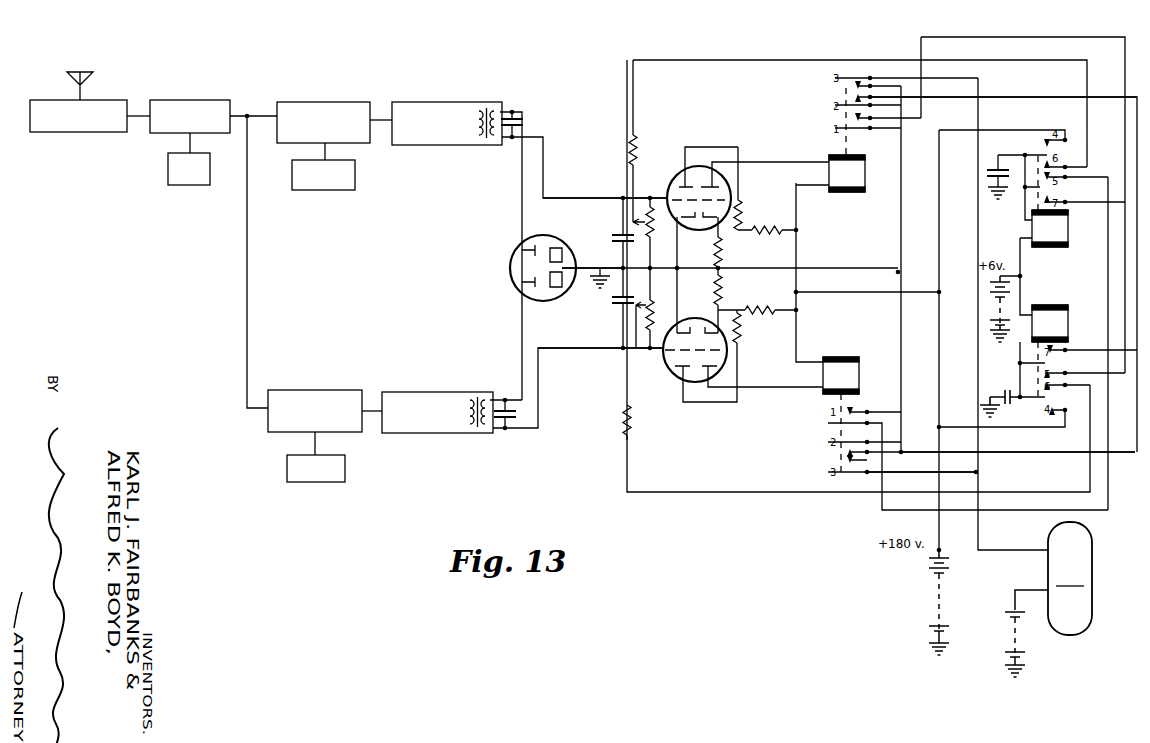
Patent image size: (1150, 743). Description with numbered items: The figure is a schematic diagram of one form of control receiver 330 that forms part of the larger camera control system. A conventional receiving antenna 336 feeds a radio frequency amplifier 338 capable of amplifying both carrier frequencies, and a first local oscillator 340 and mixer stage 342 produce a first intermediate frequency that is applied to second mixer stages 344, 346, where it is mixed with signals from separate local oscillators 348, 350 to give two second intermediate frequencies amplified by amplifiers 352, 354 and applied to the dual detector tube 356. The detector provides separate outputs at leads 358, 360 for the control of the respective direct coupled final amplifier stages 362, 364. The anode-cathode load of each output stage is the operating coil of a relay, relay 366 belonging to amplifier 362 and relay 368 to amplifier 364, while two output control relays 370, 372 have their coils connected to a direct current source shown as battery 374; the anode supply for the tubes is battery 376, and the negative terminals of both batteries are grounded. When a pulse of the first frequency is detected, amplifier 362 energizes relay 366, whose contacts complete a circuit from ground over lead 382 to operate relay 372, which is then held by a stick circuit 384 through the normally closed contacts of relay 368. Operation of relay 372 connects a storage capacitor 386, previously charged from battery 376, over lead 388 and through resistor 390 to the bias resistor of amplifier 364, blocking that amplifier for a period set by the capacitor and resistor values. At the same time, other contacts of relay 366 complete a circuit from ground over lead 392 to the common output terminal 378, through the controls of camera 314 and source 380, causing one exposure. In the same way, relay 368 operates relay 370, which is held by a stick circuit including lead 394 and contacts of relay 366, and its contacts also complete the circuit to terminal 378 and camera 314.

The camera 314 is at (1070, 578).
The receiver circuit 330 is at (584, 62).
The receiving antenna 336 is at (92, 74).
The radio frequency amplifier 338 is at (80, 133).
The first local oscillator 340 is at (180, 186).
The mixer stage 342 is at (220, 99).
The second mixer stage 344 is at (350, 100).
The second mixer stage 346 is at (335, 388).
The local oscillator 348 is at (313, 190).
The local oscillator 350 is at (302, 482).
The amplifier 352 is at (464, 100).
The amplifier 354 is at (442, 388).
The dual detector tube 356 is at (558, 238).
The lead 358 is at (605, 196).
The lead 360 is at (558, 349).
The final amplifier stage 362 is at (674, 186).
The final amplifier stage 364 is at (668, 378).
The relay 366 is at (847, 140).
The relay 368 is at (841, 414).
The output control relay 370 is at (1050, 201).
The output control relay 372 is at (1050, 350).
The battery 374 is at (1010, 300).
The battery 376 is at (926, 590).
The output terminal 378 is at (976, 472).
The source 380 is at (1013, 614).
The lead 382 is at (1037, 34).
The stick circuit 384 is at (1070, 452).
The storage capacitor 386 is at (1016, 390).
The lead 388 is at (756, 492).
The resistor 390 is at (628, 432).
The lead 392 is at (951, 246).
The lead 394 is at (1049, 94).